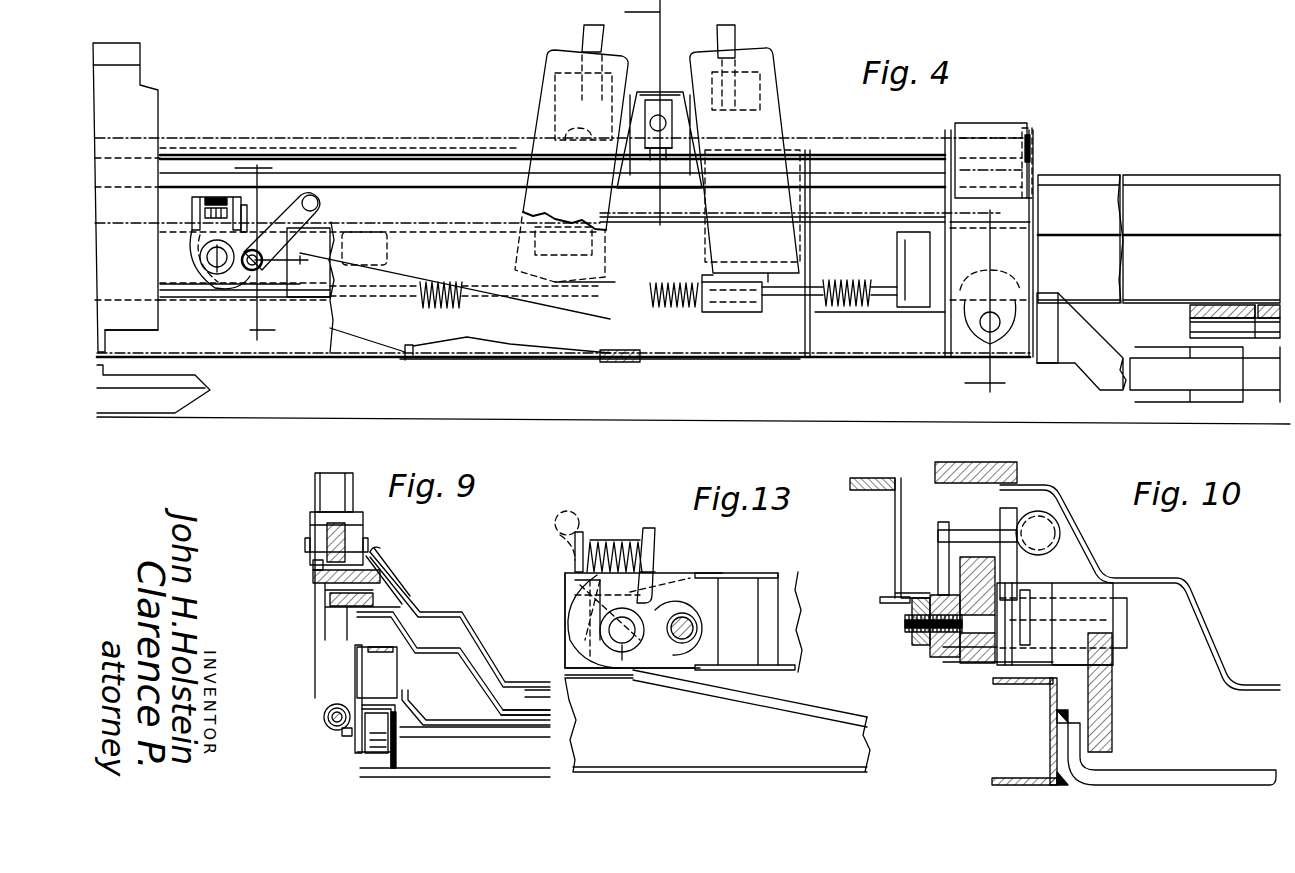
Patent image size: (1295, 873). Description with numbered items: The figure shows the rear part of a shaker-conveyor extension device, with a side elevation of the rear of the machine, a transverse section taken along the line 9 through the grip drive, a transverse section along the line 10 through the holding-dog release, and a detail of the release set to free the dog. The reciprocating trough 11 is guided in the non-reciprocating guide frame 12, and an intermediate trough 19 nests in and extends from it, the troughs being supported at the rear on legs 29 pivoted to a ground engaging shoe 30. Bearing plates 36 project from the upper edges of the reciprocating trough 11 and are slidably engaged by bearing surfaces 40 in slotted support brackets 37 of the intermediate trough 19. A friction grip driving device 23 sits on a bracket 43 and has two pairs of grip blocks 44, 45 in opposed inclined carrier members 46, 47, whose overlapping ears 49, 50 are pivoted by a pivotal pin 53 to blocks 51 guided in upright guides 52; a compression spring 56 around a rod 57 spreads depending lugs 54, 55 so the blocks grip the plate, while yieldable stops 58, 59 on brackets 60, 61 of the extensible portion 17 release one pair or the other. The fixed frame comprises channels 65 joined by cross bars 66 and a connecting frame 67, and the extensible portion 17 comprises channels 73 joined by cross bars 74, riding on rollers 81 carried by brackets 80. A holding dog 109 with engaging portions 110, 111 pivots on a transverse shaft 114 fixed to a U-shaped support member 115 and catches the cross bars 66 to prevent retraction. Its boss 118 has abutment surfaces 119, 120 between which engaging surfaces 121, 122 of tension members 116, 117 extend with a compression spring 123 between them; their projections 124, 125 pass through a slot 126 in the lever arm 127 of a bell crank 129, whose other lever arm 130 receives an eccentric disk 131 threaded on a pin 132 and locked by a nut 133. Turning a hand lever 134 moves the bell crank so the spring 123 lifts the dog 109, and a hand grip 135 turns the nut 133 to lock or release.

In FIG. 4, the section line 9— 9 is at (808, 198).
In FIG. 4, the swivel trough 10 is at (241, 249).
In FIG. 4, the reciprocating trough 11 is at (1175, 192).
In FIG. 9, the reciprocating trough 11 is at (504, 708).
In FIG. 13, the reciprocating trough 11 is at (538, 701).
In FIG. 10, the reciprocating trough 11 is at (1182, 612).
In FIG. 4, the guide frame 12 is at (917, 330).
In FIG. 9, the guide frame 12 is at (360, 772).
In FIG. 10, the guide frame 12 is at (1046, 760).
In FIG. 4, the extensible portion of the frame 17 is at (190, 212).
In FIG. 9, the extensible portion of the frame 17 is at (402, 658).
In FIG. 4, the intermediate trough 19 is at (350, 156).
In FIG. 9, the intermediate trough 19 is at (478, 655).
In FIG. 4, the friction grip driving device 23 is at (572, 46).
In FIG. 9, the friction grip driving device 23 is at (314, 484).
In FIG. 4, the leg 29 is at (150, 95).
In FIG. 4, the ground engaging shoe 30 is at (200, 398).
In FIG. 4, the bearing plate 36 is at (1070, 175).
In FIG. 9, the bearing plate 36 is at (330, 598).
In FIG. 10, the bearing plate 36 is at (980, 468).
In FIG. 4, the support bracket 37 is at (1010, 128).
In FIG. 4, the bearing surface 40 is at (1030, 156).
In FIG. 4, the bracket 43 is at (675, 92).
In FIG. 9, the bracket 43 is at (313, 574).
In FIG. 4, the friction grip block 44 is at (525, 188).
In FIG. 4, the friction grip block 45 is at (809, 190).
In FIG. 4, the carrier member 46 is at (545, 75).
In FIG. 9, the carrier member 46 is at (355, 486).
In FIG. 4, the carrier member 47 is at (775, 72).
In FIG. 4, the ear 49 is at (640, 95).
In FIG. 9, the ear 49 is at (327, 520).
In FIG. 4, the ear 50 is at (700, 55).
In FIG. 9, the ear 50 is at (364, 517).
In FIG. 4, the block 51 is at (655, 112).
In FIG. 9, the block 51 is at (306, 544).
In FIG. 9, the upright rectilinear guide 52 is at (313, 562).
In FIG. 4, the pivotal pin 53 is at (660, 160).
In FIG. 9, the pivotal pin 53 is at (376, 556).
In FIG. 4, the depending lug 54 is at (546, 345).
In FIG. 9, the depending lug 54 is at (340, 730).
In FIG. 4, the depending lug 55 is at (760, 312).
In FIG. 4, the compression spring 56 is at (695, 310).
In FIG. 9, the rod 57 is at (323, 720).
In FIG. 4, the yieldable stop 58 is at (463, 305).
In FIG. 4, the yieldable stop 59 is at (840, 308).
In FIG. 4, the bracket 60 is at (390, 246).
In FIG. 4, the bracket 61 is at (897, 245).
In FIG. 4, the channel 65 is at (1048, 365).
In FIG. 9, the channel 65 is at (357, 752).
In FIG. 13, the channel 65 is at (860, 755).
In FIG. 10, the channel 65 is at (1046, 718).
In FIG. 4, the cross bar 66 is at (615, 362).
In FIG. 9, the cross bar 66 is at (510, 778).
In FIG. 10, the cross bar 66 is at (1208, 764).
In FIG. 4, the connecting frame 67 is at (1106, 385).
In FIG. 4, the channel 73 is at (862, 222).
In FIG. 9, the channel 73 is at (390, 647).
In FIG. 13, the channel 73 is at (770, 582).
In FIG. 9, the cross bar 74 is at (510, 740).
In FIG. 4, the bracket 80 is at (960, 340).
In FIG. 9, the bracket 80 is at (356, 750).
In FIG. 4, the roller 81 is at (986, 344).
In FIG. 9, the roller 81 is at (392, 740).
In FIG. 4, the holding dog 109 is at (478, 300).
In FIG. 13, the holding dog 109 is at (866, 705).
In FIG. 10, the holding dog 109 is at (1113, 698).
In FIG. 4, the engaging portion 110 is at (598, 362).
In FIG. 4, the engaging portion 111 is at (410, 357).
In FIG. 4, the transverse shaft 114 is at (215, 265).
In FIG. 13, the transverse shaft 114 is at (625, 645).
In FIG. 10, the transverse shaft 114 is at (1128, 622).
In FIG. 4, the support member 115 is at (165, 303).
In FIG. 13, the support member 115 is at (720, 585).
In FIG. 10, the support member 115 is at (978, 665).
In FIG. 13, the tension member 116 is at (570, 596).
In FIG. 10, the tension member 116 is at (1008, 668).
In FIG. 13, the tension member 117 is at (670, 568).
In FIG. 10, the tension member 117 is at (990, 672).
In FIG. 10, the boss 118 is at (1058, 672).
In FIG. 4, the abutment surface 119 is at (245, 200).
In FIG. 13, the abutment surface 119 is at (658, 545).
In FIG. 10, the abutment surface 119 is at (1060, 534).
In FIG. 13, the abutment surface 120 is at (565, 540).
In FIG. 13, the engaging surface 121 is at (575, 528).
In FIG. 13, the engaging surface 122 is at (655, 540).
In FIG. 4, the compression spring 123 is at (222, 196).
In FIG. 13, the compression spring 123 is at (625, 532).
In FIG. 10, the outward projection 124 is at (968, 530).
In FIG. 13, the outward projection 125 is at (610, 535).
In FIG. 13, the slot 126 is at (648, 532).
In FIG. 4, the lever arm 127 is at (190, 240).
In FIG. 13, the lever arm 127 is at (582, 630).
In FIG. 10, the lever arm 127 is at (938, 556).
In FIG. 4, the bell crank 129 is at (204, 280).
In FIG. 13, the bell crank 129 is at (594, 638).
In FIG. 4, the lever arm 130 is at (196, 200).
In FIG. 13, the lever arm 130 is at (665, 652).
In FIG. 10, the lever arm 130 is at (946, 665).
In FIG. 4, the eccentric disk 131 is at (255, 250).
In FIG. 13, the eccentric disk 131 is at (700, 668).
In FIG. 10, the eccentric disk 131 is at (962, 650).
In FIG. 13, the pin 132 is at (698, 627).
In FIG. 10, the pin 132 is at (905, 623).
In FIG. 10, the nut 133 is at (912, 642).
In FIG. 4, the hand lever 134 is at (290, 213).
In FIG. 13, the hand lever 134 is at (590, 522).
In FIG. 10, the hand lever 134 is at (895, 527).
In FIG. 4, the hand grip 135 is at (300, 240).
In FIG. 10, the hand grip 135 is at (880, 600).